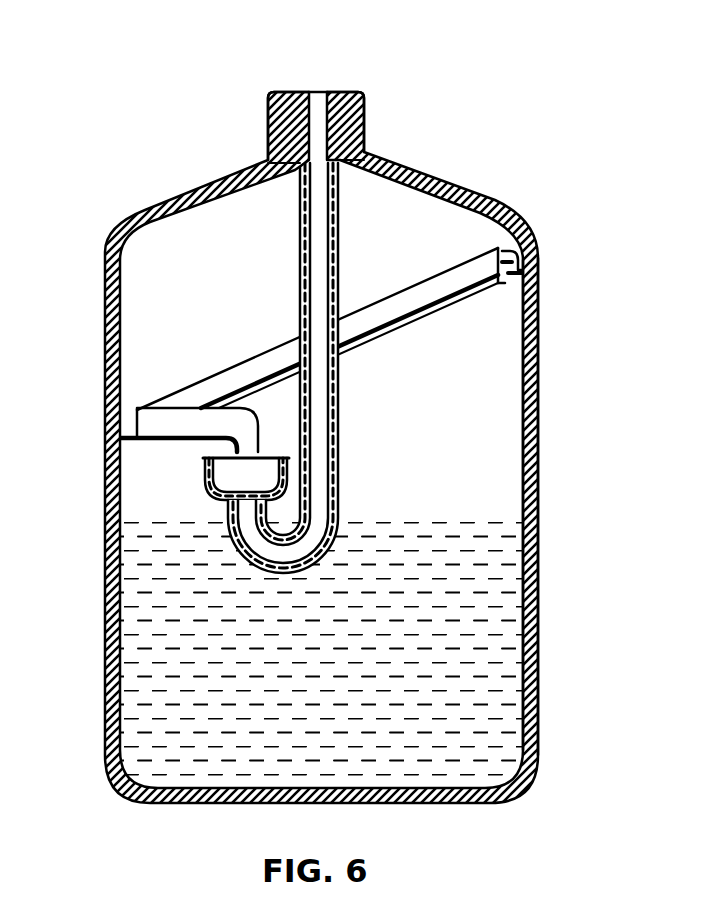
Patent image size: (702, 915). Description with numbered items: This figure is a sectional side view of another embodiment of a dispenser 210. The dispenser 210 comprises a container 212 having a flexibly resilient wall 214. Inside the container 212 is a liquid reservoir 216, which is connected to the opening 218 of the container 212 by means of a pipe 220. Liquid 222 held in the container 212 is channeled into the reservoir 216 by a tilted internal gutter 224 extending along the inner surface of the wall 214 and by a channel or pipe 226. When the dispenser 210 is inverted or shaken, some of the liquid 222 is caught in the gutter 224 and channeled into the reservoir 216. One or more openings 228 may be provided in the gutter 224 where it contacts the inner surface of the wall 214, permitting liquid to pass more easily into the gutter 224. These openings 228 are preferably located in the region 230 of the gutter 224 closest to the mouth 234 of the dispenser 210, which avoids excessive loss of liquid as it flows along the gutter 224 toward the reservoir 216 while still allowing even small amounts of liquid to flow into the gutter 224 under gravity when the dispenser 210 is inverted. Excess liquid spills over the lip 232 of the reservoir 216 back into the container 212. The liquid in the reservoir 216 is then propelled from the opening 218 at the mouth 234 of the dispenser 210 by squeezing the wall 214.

The dispenser 210 is at (556, 546).
The container 212 is at (538, 356).
The flexibly resilient wall 214 is at (538, 400).
The liquid reservoir 216 is at (205, 482).
The opening 218 is at (314, 68).
The pipe 220 is at (300, 245).
The liquid 222 is at (490, 671).
The tilted internal gutter 224 is at (410, 290).
The channel or pipe 226 is at (232, 395).
The openings 228 is at (500, 288).
The region of the gutter 230 is at (515, 245).
The lip 232 is at (205, 458).
The mouth 234 is at (250, 125).